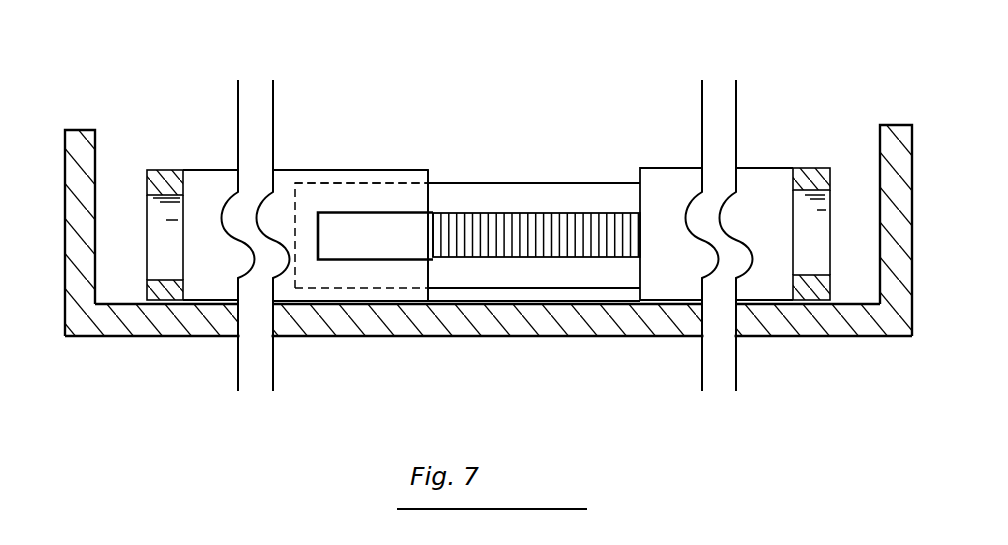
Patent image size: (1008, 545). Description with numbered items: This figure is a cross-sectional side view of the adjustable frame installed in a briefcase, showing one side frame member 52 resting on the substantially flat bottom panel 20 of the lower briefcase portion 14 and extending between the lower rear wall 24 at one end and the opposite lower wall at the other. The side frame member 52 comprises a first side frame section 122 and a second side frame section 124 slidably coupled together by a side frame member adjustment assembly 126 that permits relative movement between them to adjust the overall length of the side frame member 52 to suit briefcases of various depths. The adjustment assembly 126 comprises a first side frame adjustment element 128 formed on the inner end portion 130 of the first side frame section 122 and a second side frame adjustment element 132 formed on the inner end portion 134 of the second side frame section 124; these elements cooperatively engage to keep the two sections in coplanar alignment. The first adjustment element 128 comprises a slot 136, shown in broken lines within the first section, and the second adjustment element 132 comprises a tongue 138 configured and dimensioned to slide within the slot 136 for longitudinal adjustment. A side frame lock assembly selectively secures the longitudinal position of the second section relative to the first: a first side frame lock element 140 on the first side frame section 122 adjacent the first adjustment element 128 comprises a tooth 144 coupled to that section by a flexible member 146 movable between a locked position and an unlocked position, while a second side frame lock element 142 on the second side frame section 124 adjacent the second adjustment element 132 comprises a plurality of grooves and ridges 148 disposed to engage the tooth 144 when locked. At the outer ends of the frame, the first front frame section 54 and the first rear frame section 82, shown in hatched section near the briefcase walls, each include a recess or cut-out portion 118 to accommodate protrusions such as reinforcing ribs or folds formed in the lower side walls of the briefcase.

The lower briefcase portion 14 is at (808, 345).
The bottom panel 20 is at (112, 338).
The lower rear wall 24 is at (57, 132).
The side frame member 52 is at (502, 118).
The first front frame section 54 is at (793, 167).
The first rear frame section 82 is at (150, 170).
The recess or cut-out portion 118 is at (150, 227).
The first side frame section 122 is at (225, 168).
The second side frame section 124 is at (760, 167).
The side frame member adjustment assembly 126 is at (485, 162).
The first side frame adjustment element 128 is at (423, 163).
The inner end portion of the first side frame section 130 is at (295, 172).
The second side frame adjustment element 132 is at (502, 168).
The inner end portion of the second side frame section 134 is at (687, 168).
The slot 136 is at (333, 183).
The tongue 138 is at (612, 182).
The first side frame lock element 140 is at (393, 212).
The second side frame lock element 142 is at (567, 272).
The tooth 144 is at (436, 236).
The flexible member 146 is at (367, 243).
The grooves and ridges 148 is at (523, 217).